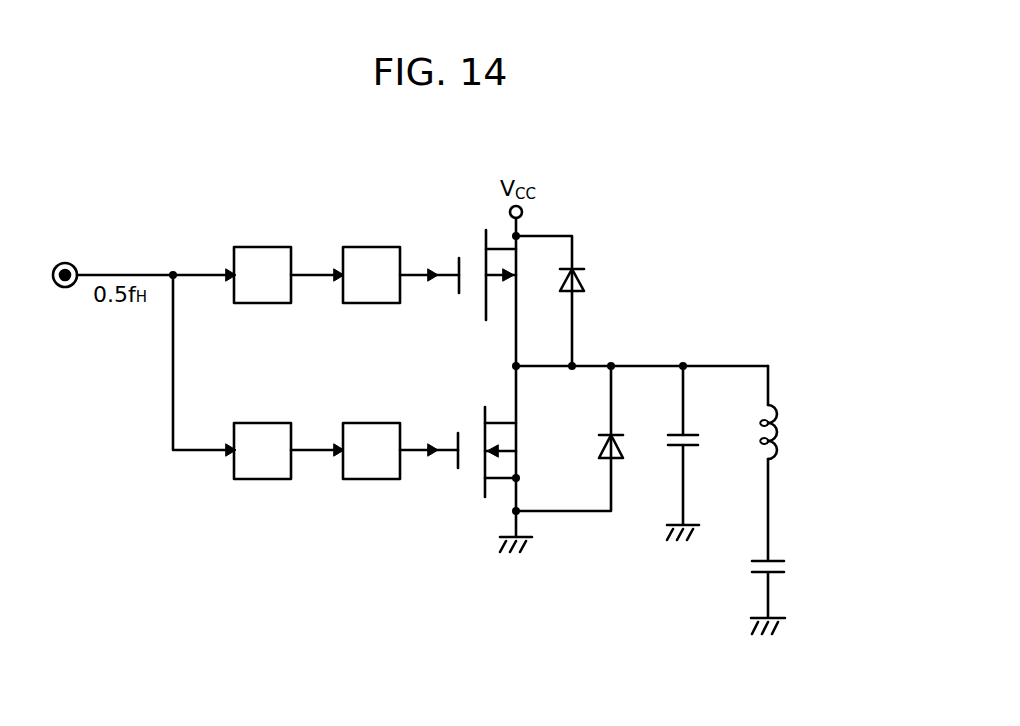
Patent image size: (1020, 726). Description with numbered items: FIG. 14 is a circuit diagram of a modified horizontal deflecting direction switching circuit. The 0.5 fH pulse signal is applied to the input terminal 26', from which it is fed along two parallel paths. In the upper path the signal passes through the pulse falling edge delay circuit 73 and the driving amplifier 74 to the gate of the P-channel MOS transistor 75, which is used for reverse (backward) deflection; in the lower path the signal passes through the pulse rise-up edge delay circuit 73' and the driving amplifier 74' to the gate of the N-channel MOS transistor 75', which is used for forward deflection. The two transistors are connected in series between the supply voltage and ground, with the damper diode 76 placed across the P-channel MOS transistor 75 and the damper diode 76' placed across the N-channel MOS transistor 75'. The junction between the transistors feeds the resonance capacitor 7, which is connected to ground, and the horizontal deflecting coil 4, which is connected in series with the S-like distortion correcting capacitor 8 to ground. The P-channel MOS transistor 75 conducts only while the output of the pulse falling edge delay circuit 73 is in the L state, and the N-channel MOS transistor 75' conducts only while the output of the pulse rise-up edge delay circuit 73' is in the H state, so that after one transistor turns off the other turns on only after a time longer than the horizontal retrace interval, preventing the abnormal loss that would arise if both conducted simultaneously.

The input terminal 26' is at (80, 231).
The pulse falling edge delay circuit 73 is at (262, 230).
The driving amplifier 74 is at (371, 230).
The P-channel MOS transistor 75 is at (479, 243).
The damper diode 76 is at (582, 300).
The pulse rise-up edge delay circuit 73' is at (251, 494).
The driving amplifier 74' is at (362, 494).
The N-channel MOS transistor 75' is at (464, 479).
The damper diode 76' is at (569, 438).
The resonance capacitor 7 is at (672, 453).
The horizontal deflecting coil 4 is at (780, 402).
The S-like distortion correcting capacitor 8 is at (780, 553).